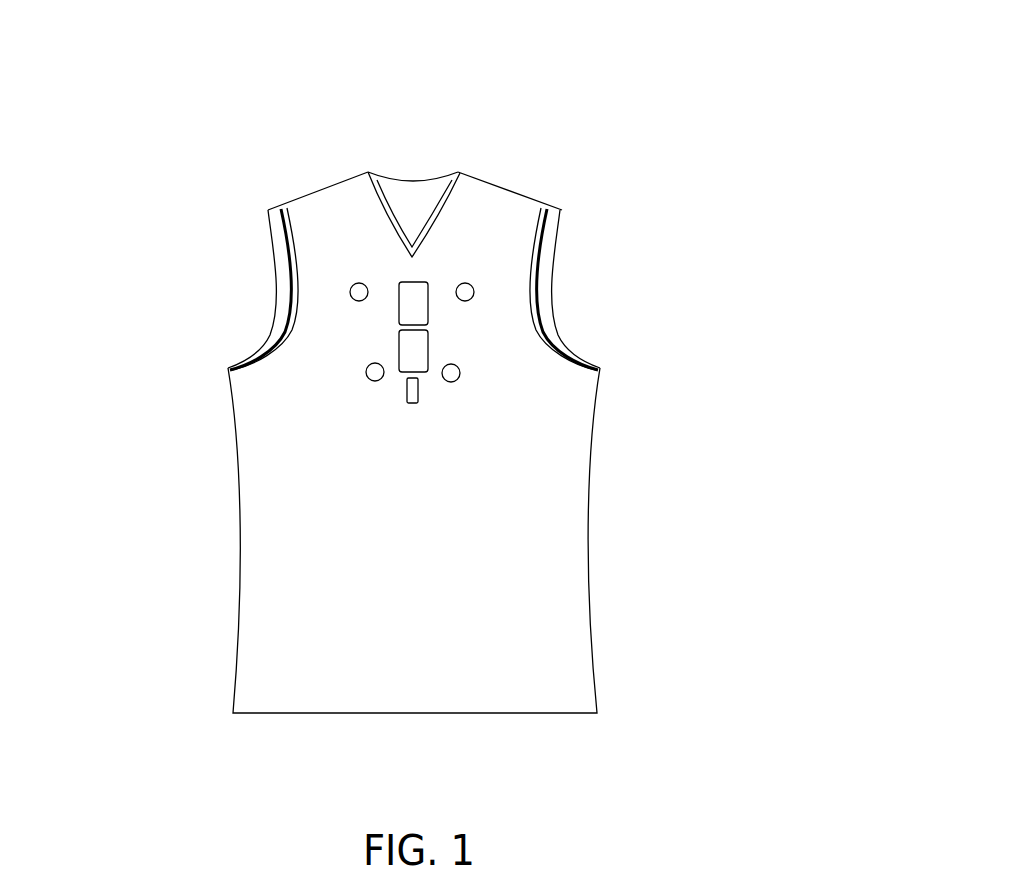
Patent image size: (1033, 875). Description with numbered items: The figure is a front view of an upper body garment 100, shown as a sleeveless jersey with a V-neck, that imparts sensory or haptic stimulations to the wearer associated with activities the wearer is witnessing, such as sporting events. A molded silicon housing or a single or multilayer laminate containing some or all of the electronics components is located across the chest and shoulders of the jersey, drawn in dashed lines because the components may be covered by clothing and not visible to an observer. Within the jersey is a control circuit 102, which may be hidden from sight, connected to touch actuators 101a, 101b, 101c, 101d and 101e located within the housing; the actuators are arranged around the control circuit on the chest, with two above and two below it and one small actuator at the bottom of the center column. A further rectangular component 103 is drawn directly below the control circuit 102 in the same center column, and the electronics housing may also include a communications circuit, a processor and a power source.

The garment 100 is at (578, 145).
The touch actuator 101a is at (338, 293).
The touch actuator 101b is at (487, 292).
The touch actuator 101c is at (360, 372).
The touch actuator 101d is at (470, 375).
The touch actuator 101e is at (422, 400).
The control circuit 102 is at (433, 313).
The power module 103 is at (433, 350).